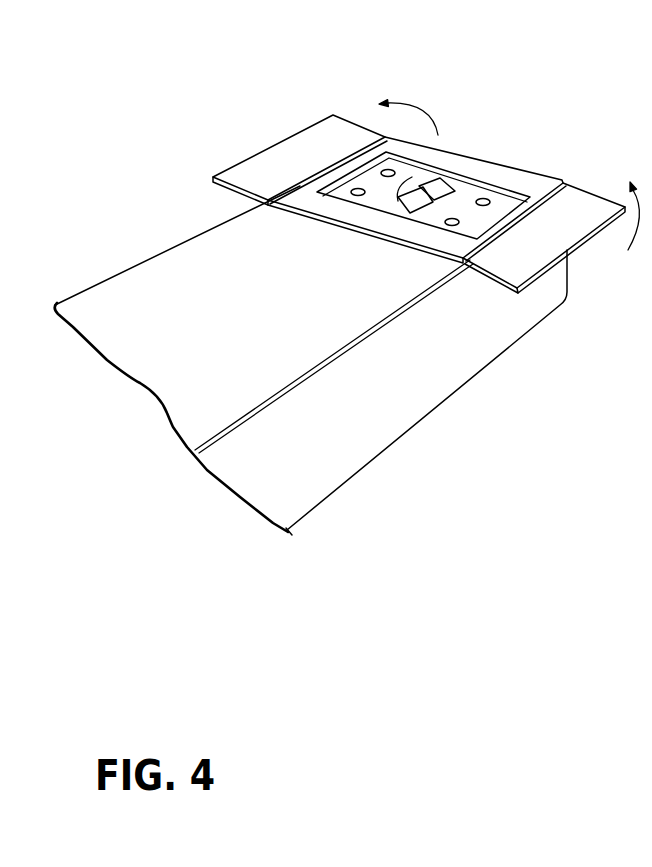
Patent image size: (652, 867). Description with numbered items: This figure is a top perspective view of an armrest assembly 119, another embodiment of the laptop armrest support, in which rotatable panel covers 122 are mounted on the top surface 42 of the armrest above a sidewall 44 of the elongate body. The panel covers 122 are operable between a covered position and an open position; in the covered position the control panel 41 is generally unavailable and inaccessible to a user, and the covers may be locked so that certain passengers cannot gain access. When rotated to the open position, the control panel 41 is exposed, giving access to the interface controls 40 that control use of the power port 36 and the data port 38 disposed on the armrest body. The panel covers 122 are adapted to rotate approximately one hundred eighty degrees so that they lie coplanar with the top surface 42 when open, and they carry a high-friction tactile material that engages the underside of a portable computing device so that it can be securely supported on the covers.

The armrest assembly 119 is at (127, 177).
The rotatable panel covers 122 is at (318, 143).
The power port 36 is at (388, 169).
The data port 38 is at (354, 190).
The interface controls 40 is at (440, 180).
The control panel 41 is at (509, 128).
The top surface 42 is at (254, 319).
The sidewall 44 is at (358, 434).